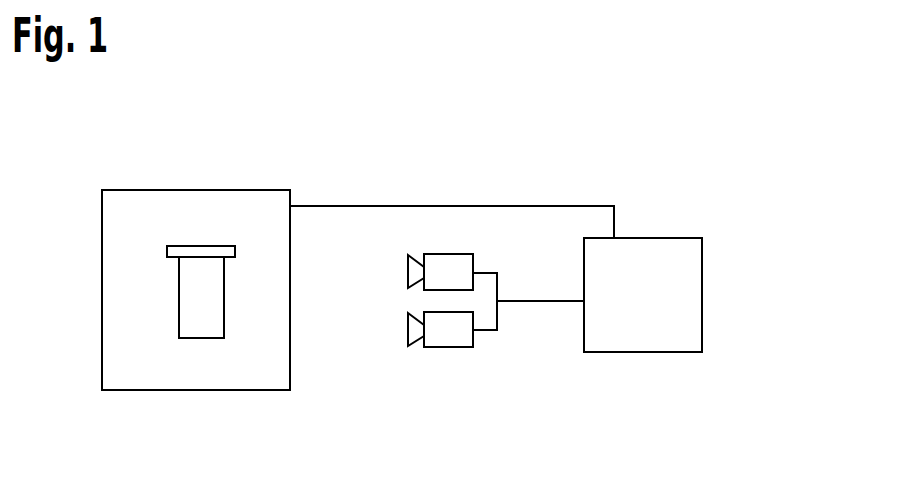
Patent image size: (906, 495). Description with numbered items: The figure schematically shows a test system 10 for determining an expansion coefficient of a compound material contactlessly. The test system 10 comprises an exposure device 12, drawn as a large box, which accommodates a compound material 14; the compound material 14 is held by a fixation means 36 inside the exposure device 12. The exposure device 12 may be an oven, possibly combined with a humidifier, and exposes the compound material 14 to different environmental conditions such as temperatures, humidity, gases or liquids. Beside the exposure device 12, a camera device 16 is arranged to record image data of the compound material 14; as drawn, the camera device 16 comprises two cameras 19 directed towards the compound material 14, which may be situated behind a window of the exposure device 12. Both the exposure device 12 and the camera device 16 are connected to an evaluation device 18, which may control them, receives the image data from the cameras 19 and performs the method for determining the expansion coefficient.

The test system 10 is at (760, 138).
The exposure device 12 is at (194, 390).
The compound material 14 is at (179, 309).
The fixation means 36 is at (167, 252).
The camera device 16 is at (395, 358).
The cameras 19 is at (408, 272).
The evaluation device 18 is at (643, 352).